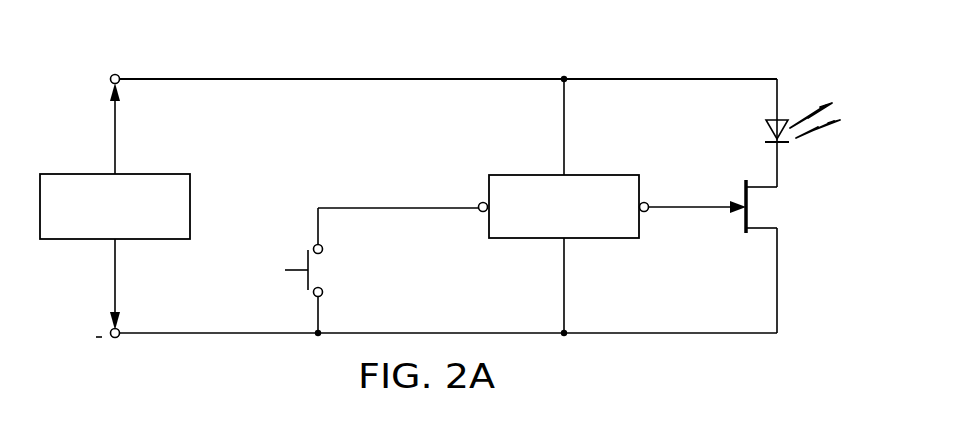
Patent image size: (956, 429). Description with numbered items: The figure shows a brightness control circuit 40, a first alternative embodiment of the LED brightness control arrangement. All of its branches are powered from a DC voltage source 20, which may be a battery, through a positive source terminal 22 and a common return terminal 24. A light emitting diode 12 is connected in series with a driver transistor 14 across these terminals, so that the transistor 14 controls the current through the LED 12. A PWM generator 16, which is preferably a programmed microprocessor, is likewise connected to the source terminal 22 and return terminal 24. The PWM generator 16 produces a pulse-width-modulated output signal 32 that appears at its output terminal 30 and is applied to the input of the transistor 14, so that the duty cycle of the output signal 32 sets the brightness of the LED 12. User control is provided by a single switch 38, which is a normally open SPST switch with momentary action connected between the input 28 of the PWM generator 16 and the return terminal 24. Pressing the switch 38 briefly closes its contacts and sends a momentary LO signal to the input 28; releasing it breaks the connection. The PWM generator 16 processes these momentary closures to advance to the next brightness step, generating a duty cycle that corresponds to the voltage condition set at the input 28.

The light emitting diode 12 is at (768, 132).
The transistor 14 is at (744, 196).
The PWM generator 16 is at (594, 175).
The DC voltage source 20 is at (82, 174).
The source terminal 22 is at (112, 75).
The return terminal 24 is at (112, 338).
The input 28 is at (482, 202).
The output terminal 30 is at (645, 202).
The output signal 32 is at (690, 209).
The switch 38 is at (307, 285).
The brightness control circuit 40 is at (548, 52).